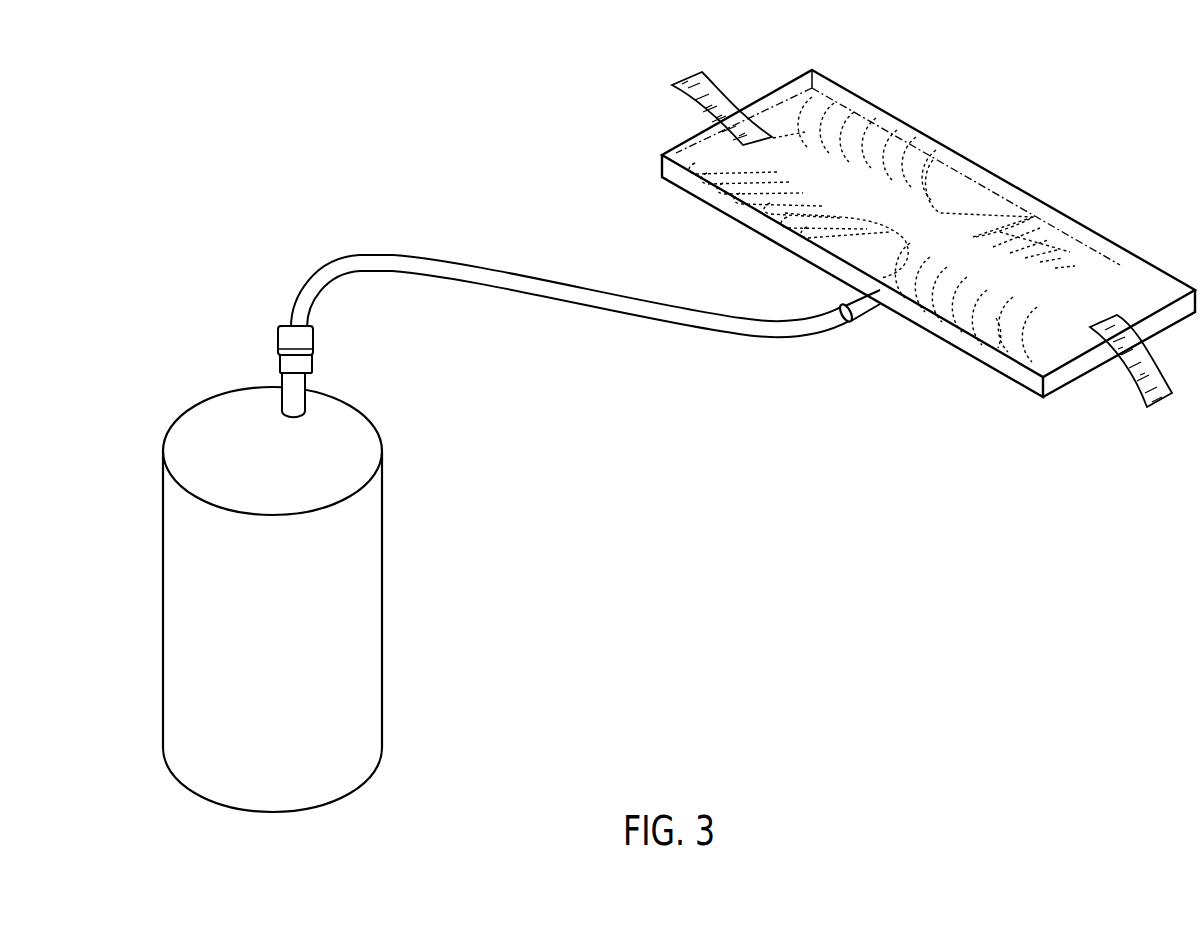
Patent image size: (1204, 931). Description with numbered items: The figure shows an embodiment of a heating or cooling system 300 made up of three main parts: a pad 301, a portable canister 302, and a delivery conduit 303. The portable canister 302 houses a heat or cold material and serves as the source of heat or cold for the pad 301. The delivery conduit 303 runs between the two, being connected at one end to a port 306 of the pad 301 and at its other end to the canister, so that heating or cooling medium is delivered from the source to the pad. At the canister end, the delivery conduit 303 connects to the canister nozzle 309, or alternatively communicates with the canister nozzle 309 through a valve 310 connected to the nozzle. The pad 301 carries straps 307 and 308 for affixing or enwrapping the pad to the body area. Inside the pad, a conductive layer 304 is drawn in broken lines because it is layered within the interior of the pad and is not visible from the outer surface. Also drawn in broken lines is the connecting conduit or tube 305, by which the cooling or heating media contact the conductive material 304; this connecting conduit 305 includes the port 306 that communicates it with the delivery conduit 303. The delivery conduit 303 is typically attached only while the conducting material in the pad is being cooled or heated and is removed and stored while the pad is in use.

The system 300 is at (229, 246).
The pad 301 is at (960, 190).
The portable canister 302 is at (360, 685).
The delivery conduit 303 is at (478, 272).
The conductive layer 304 is at (1056, 240).
The connecting conduit 305 is at (1003, 318).
The port 306 is at (862, 318).
The strap 307 is at (718, 106).
The strap 308 is at (1130, 373).
The canister nozzle 309 is at (297, 383).
The valve 310 is at (287, 346).